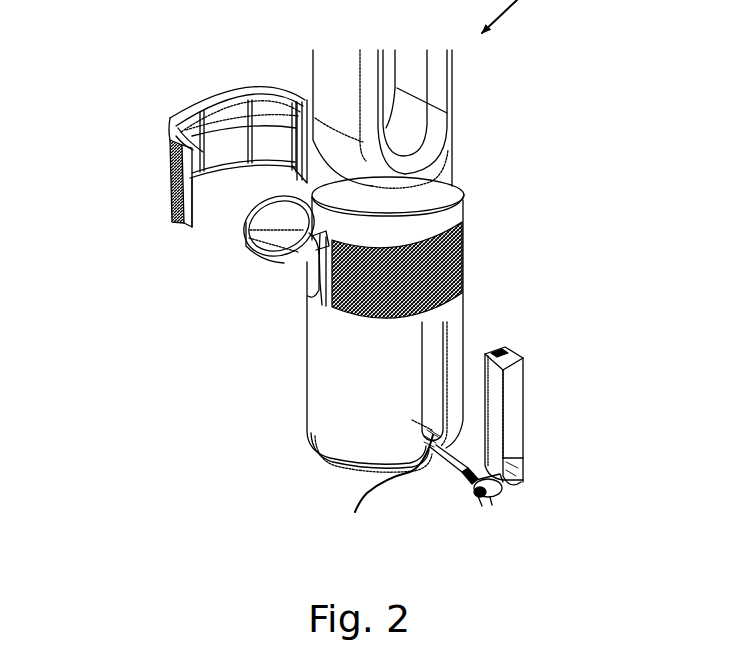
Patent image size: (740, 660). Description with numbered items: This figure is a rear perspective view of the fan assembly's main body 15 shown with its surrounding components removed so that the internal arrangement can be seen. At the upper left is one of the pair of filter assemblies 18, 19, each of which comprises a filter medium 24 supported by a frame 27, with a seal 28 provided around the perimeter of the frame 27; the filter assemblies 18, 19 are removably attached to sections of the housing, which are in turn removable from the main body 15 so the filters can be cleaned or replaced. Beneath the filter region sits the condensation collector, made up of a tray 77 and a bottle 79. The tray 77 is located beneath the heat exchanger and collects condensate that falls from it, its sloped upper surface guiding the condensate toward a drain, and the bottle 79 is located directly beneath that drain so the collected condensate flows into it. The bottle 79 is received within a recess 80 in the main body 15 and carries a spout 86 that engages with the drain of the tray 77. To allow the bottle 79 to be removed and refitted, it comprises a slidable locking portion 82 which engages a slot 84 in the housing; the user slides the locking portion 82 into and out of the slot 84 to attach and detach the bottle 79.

The main body 15 is at (307, 352).
The filter assembly 18 is at (175, 106).
The filter assembly 19 is at (466, 231).
The filter medium 24 is at (188, 128).
The frame 27 is at (252, 104).
The seal 28 is at (206, 92).
The tray 77 is at (250, 240).
The bottle 79 is at (512, 405).
The recess 80 is at (437, 330).
The slidable locking portion 82 is at (520, 458).
The slot 84 is at (358, 508).
The spout 86 is at (497, 349).